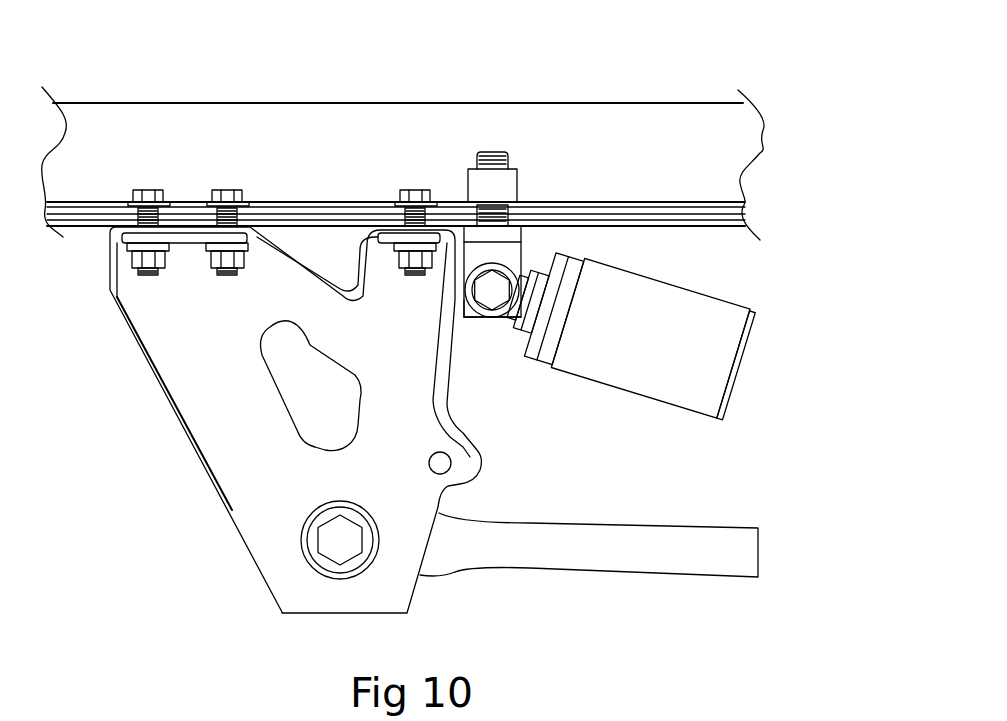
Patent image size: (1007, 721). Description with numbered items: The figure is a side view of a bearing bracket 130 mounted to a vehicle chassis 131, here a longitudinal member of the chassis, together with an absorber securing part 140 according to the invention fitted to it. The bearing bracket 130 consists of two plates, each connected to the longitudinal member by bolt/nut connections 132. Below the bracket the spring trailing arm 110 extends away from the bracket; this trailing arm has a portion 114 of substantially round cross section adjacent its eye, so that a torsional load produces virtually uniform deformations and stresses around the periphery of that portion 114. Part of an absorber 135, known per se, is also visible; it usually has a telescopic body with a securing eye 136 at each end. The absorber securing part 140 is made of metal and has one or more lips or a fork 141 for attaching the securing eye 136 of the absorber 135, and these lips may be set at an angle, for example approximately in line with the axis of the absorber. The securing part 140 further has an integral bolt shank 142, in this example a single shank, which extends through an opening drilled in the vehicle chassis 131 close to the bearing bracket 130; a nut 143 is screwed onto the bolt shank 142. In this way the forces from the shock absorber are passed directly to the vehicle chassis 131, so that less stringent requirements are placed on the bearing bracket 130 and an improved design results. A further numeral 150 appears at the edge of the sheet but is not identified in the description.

The spring trailing arm 110 is at (632, 555).
The portion 114 is at (447, 577).
The bearing bracket 130 is at (233, 430).
The vehicle chassis 131 is at (738, 158).
The bolt/nut connections 132 is at (227, 183).
The absorber 135 is at (650, 403).
The securing eye 136 is at (492, 323).
The absorber securing part 140 is at (507, 257).
The lips or fork 141 is at (462, 300).
The bolt shank 142 is at (492, 152).
The nut 143 is at (503, 190).
The partial component (cut off) 150 is at (128, 713).